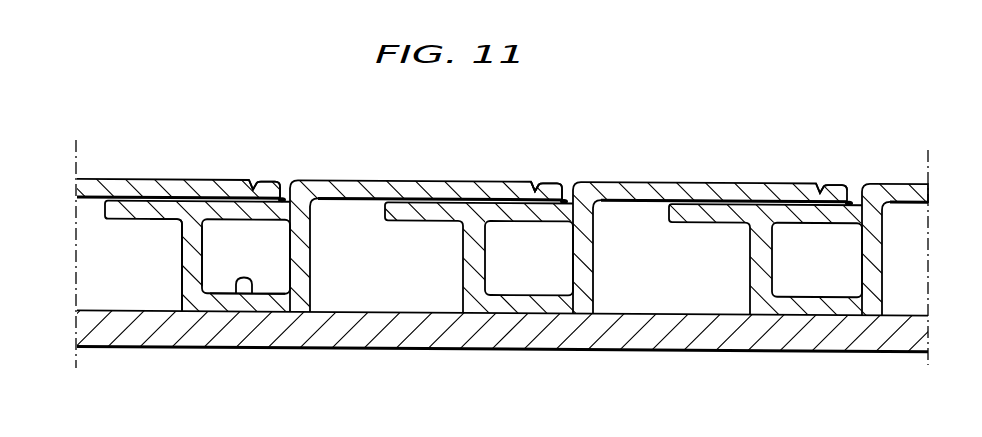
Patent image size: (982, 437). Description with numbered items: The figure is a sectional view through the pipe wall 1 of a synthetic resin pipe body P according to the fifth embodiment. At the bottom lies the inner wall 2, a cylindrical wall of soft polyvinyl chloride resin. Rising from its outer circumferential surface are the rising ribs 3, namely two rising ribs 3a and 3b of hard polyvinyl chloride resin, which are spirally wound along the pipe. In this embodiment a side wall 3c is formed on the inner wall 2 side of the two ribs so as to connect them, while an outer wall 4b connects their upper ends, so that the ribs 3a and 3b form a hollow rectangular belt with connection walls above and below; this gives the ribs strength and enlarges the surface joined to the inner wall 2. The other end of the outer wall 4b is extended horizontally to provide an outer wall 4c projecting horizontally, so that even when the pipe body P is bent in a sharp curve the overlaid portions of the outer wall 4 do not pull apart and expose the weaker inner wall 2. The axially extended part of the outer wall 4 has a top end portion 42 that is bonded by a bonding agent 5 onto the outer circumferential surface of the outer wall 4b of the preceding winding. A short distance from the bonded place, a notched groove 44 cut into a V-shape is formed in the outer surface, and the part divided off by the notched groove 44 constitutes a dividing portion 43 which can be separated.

The pipe wall 1 is at (692, 176).
The inner wall 2 is at (631, 333).
The rising ribs 3 is at (571, 270).
The rising rib 3a is at (204, 266).
The rising rib 3b is at (290, 276).
The side wall 3c is at (243, 295).
The outer wall 4 is at (405, 190).
The outer wall 4b is at (208, 210).
The outer wall 4c is at (128, 210).
The bonding agent 5 is at (282, 197).
The top end portion 42 is at (551, 198).
The dividing portion 43 is at (259, 190).
The notched groove 44 is at (537, 188).
The pipe body P is at (778, 168).